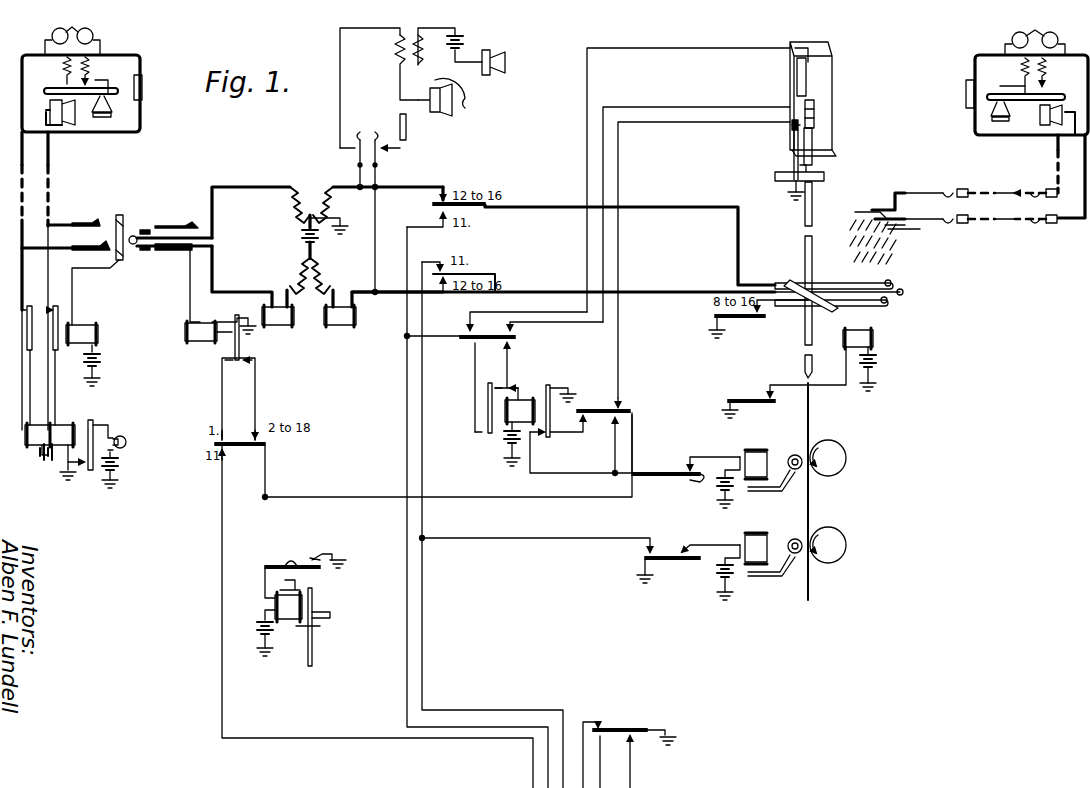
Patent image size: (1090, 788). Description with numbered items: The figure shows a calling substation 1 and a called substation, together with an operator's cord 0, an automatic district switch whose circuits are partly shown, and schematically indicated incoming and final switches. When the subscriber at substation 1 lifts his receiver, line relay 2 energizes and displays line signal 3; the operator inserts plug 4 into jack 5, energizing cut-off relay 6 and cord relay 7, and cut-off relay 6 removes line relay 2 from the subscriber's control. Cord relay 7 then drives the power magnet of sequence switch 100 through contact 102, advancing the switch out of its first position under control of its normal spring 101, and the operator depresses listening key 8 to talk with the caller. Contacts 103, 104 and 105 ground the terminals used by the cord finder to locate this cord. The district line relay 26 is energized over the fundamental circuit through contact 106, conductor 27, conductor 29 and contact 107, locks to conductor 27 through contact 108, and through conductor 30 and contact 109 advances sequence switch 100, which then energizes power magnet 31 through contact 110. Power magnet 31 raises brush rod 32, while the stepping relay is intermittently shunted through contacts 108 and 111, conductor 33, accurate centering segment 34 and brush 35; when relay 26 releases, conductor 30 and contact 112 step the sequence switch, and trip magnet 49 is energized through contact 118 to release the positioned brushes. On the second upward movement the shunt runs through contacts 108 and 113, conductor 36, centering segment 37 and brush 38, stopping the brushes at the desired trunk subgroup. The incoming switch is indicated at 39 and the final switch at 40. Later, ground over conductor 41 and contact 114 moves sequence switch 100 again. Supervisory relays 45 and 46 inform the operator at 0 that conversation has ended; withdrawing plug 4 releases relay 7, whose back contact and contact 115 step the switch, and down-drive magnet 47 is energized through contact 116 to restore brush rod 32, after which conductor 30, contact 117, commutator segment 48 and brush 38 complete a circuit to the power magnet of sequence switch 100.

The operator's cord 0 is at (327, 235).
The calling substation 1 is at (93, 79).
The line relay 2 is at (60, 432).
The line signal 3 is at (124, 436).
The plug 4 is at (176, 224).
The jack 5 is at (88, 223).
The cut-off relay 6 is at (86, 326).
The cord relay 7 is at (198, 336).
The listening key 8 is at (422, 161).
The district line relay 26 is at (522, 400).
The conductor 27 is at (405, 670).
The conductor 29 is at (422, 640).
The conductor 30 is at (506, 498).
The power magnet 31 is at (752, 458).
The brush rod 32 is at (805, 248).
The conductor 33 is at (697, 108).
The accurate centering segment 34 is at (816, 110).
The centering brush 35 is at (812, 140).
The conductor 36 is at (742, 48).
The accurate centering segment 37 is at (818, 48).
The brush 38 is at (792, 158).
The incoming switch 39 is at (945, 208).
The final switch 40 is at (1033, 208).
The conductor 41 is at (221, 626).
The supervisory relay 45 is at (280, 326).
The supervisory relay 46 is at (345, 326).
The down-drive magnet 47 is at (757, 540).
The commutator segment 48 is at (790, 126).
The trip magnet 49 is at (872, 338).
The sequence switch 100 is at (313, 604).
The normal spring 101 is at (320, 568).
The contact 102 is at (238, 440).
The contact 103 is at (622, 742).
The contact 104 is at (582, 720).
The contact 105 is at (612, 720).
The contact 106 is at (505, 348).
The contact 107 is at (654, 548).
The contact 108 is at (472, 350).
The contact 109 is at (610, 420).
The contact 110 is at (695, 480).
The contact 111 is at (515, 332).
The contact 112 is at (593, 429).
The contact 113 is at (478, 330).
The contact 114 is at (226, 448).
The contact 115 is at (268, 445).
The contact 116 is at (684, 546).
The contact 117 is at (616, 400).
The contact 118 is at (778, 398).